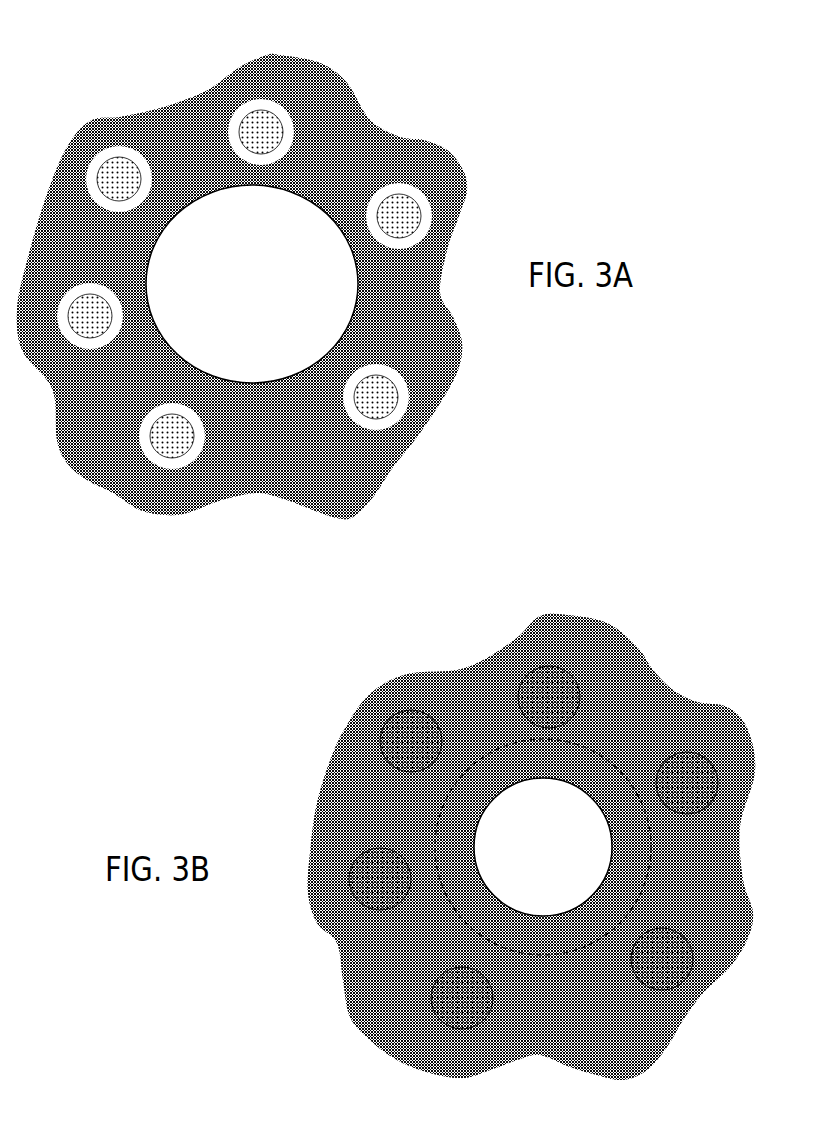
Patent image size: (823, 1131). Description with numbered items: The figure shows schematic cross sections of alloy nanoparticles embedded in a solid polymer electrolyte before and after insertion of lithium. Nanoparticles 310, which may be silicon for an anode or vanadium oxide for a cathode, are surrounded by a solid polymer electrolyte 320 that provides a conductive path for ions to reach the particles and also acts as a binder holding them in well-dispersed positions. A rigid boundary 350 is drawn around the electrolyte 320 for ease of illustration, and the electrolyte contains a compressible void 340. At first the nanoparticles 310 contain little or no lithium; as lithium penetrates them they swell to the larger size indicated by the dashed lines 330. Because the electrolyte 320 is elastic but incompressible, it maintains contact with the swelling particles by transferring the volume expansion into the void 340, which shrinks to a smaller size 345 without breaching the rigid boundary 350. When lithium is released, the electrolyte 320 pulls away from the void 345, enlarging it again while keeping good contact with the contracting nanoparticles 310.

In FIG. 3A, the nanoparticles 310 is at (405, 213).
In FIG. 3A, the solid polymer electrolyte 320 is at (330, 147).
In FIG. 3B, the solid polymer electrolyte 320 is at (347, 912).
In FIG. 3A, the swollen nanoparticles 330 is at (228, 117).
In FIG. 3B, the swollen nanoparticles 330 is at (402, 737).
In FIG. 3A, the void 340 is at (273, 292).
In FIG. 3B, the shrunken void 345 is at (568, 860).
In FIG. 3A, the rigid boundary 350 is at (112, 492).
In FIG. 3B, the rigid boundary 350 is at (607, 627).